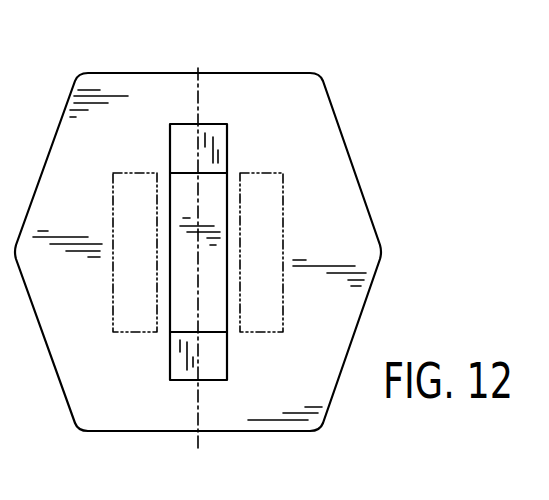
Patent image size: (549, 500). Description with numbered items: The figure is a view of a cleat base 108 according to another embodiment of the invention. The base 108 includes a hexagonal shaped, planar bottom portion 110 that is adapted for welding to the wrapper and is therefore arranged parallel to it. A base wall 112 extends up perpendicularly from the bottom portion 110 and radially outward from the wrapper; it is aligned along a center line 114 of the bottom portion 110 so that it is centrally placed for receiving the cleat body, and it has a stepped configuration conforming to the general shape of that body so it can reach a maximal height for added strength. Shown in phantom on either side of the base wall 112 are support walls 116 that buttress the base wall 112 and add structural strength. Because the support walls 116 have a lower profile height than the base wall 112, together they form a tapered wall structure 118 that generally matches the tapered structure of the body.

The base 108 is at (370, 100).
The bottom portion 110 is at (146, 72).
The base wall 112 is at (211, 124).
The center line 114 is at (199, 410).
The support walls 116 is at (262, 172).
The tapered wall structure 118 is at (232, 362).